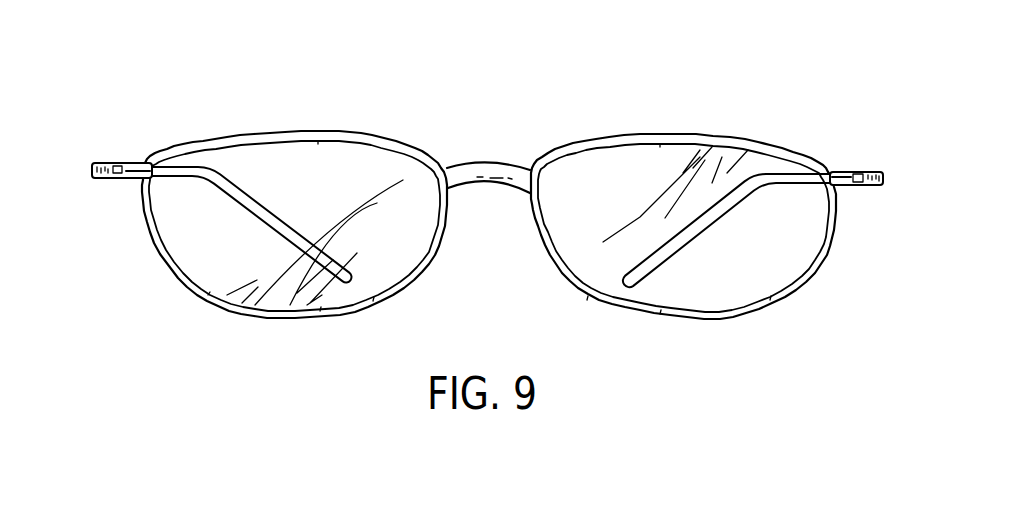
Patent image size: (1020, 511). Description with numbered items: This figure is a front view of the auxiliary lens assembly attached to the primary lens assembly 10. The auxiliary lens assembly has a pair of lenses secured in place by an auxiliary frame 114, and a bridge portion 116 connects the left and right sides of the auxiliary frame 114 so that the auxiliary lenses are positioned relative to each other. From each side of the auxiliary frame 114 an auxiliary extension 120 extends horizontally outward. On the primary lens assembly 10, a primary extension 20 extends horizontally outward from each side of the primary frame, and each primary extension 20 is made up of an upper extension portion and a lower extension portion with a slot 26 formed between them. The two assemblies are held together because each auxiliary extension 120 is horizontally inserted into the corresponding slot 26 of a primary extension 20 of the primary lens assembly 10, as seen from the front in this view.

The primary lens assembly 10 is at (162, 342).
The primary extension 20 is at (100, 180).
The slot 26 is at (118, 165).
The auxiliary frame 114 is at (339, 131).
The bridge portion 116 is at (480, 160).
The auxiliary extension 120 is at (136, 165).